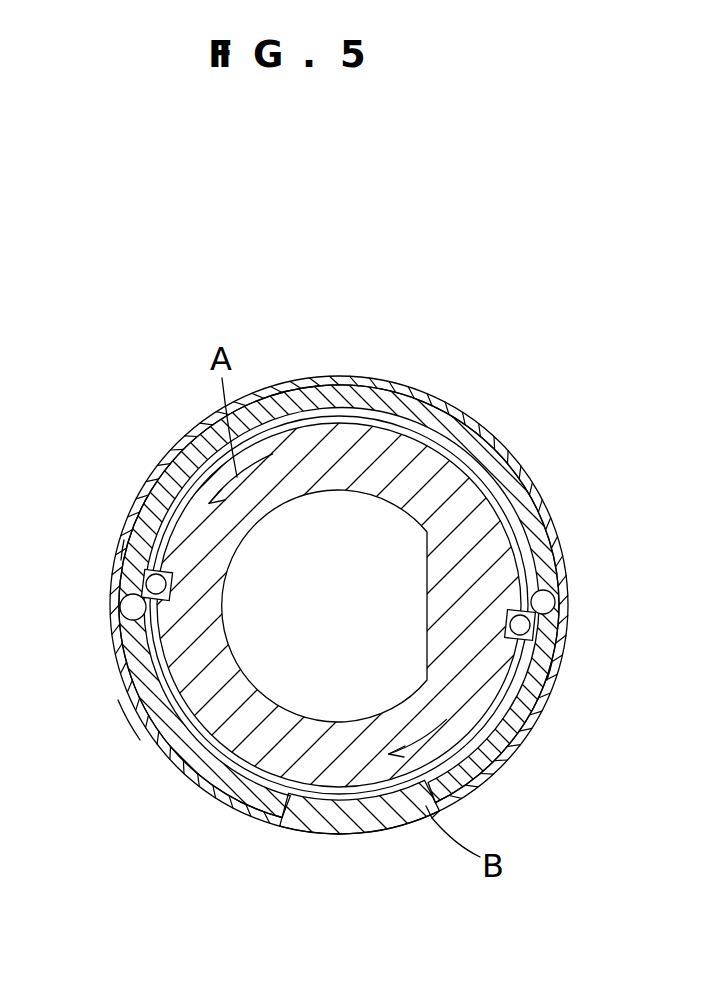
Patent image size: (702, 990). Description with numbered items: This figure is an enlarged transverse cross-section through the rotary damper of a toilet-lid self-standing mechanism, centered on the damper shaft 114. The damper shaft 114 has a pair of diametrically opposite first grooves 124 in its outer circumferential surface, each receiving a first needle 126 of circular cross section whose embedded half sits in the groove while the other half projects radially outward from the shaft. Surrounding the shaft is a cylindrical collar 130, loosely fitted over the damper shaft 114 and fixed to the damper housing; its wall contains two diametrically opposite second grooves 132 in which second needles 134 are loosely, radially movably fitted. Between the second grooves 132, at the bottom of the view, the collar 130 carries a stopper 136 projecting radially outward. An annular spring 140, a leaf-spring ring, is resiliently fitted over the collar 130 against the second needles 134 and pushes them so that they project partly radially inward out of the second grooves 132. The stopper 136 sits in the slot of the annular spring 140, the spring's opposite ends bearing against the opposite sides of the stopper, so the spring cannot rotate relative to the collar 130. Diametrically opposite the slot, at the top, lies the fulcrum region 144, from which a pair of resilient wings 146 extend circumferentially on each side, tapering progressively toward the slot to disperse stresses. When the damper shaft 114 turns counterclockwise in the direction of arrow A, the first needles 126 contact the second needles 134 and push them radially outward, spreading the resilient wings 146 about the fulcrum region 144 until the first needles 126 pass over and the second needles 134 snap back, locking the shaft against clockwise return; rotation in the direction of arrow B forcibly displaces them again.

The damper shaft 114 is at (467, 485).
The first grooves 124 is at (120, 545).
The first needles 126 is at (110, 575).
The collar 130 is at (220, 782).
The second grooves 132 is at (112, 622).
The second needles 134 is at (122, 607).
The stopper 136 is at (345, 835).
The annular spring 140 is at (197, 432).
The fulcrum region 144 is at (350, 380).
The resilient wings 146 is at (128, 695).